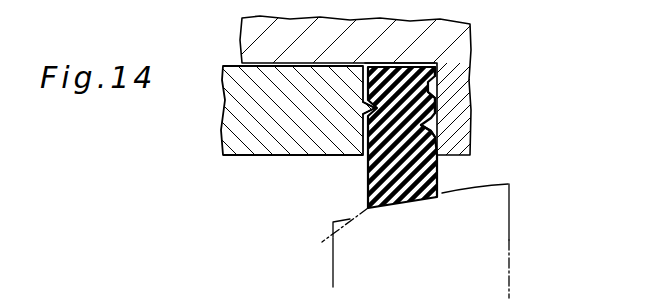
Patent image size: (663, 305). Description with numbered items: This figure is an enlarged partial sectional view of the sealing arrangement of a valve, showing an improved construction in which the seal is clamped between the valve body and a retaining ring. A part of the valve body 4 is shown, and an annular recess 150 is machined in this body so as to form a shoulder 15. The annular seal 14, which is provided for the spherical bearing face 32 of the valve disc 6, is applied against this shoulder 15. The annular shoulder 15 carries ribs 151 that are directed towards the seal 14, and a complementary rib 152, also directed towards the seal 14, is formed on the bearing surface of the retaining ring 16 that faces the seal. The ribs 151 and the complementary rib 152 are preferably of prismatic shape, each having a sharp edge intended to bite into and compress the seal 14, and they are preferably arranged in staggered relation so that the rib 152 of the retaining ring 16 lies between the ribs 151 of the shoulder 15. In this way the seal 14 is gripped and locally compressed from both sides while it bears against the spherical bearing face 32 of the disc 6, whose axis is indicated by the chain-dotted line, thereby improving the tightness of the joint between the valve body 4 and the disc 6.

The valve body 4 is at (458, 72).
The valve disc 6 is at (488, 230).
The annular seal 14 is at (437, 108).
The shoulder 15 is at (438, 77).
The retaining ring 16 is at (255, 113).
The spherical bearing face 32 is at (315, 248).
The annular recess 150 is at (365, 62).
The ribs 151 is at (430, 90).
The complementary rib 152 is at (363, 115).